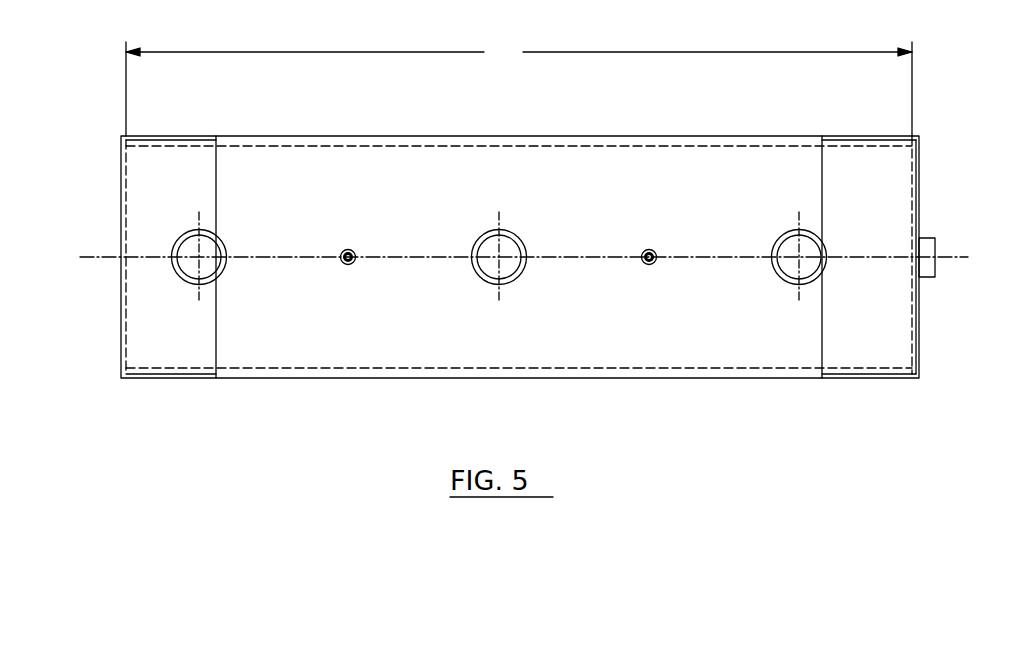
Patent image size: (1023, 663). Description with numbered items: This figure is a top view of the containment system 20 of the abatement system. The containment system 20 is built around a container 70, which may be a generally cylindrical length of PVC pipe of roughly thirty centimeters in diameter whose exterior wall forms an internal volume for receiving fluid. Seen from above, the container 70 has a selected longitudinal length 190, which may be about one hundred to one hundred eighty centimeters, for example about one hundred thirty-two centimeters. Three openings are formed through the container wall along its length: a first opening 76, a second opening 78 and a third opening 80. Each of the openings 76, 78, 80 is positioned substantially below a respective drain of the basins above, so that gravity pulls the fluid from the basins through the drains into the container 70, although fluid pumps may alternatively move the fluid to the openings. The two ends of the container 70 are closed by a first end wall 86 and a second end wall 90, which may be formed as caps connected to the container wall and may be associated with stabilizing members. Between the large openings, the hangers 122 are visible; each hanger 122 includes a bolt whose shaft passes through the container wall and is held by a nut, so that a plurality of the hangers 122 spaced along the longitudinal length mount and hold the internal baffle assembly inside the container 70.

The containment system 20 is at (521, 247).
The container 70 is at (356, 140).
The first opening 76 is at (190, 248).
The second opening 78 is at (490, 247).
The third opening 80 is at (790, 247).
The first end wall 86 is at (121, 348).
The second end wall 90 is at (919, 347).
The hanger 122 is at (351, 249).
The longitudinal length 190 is at (519, 88).